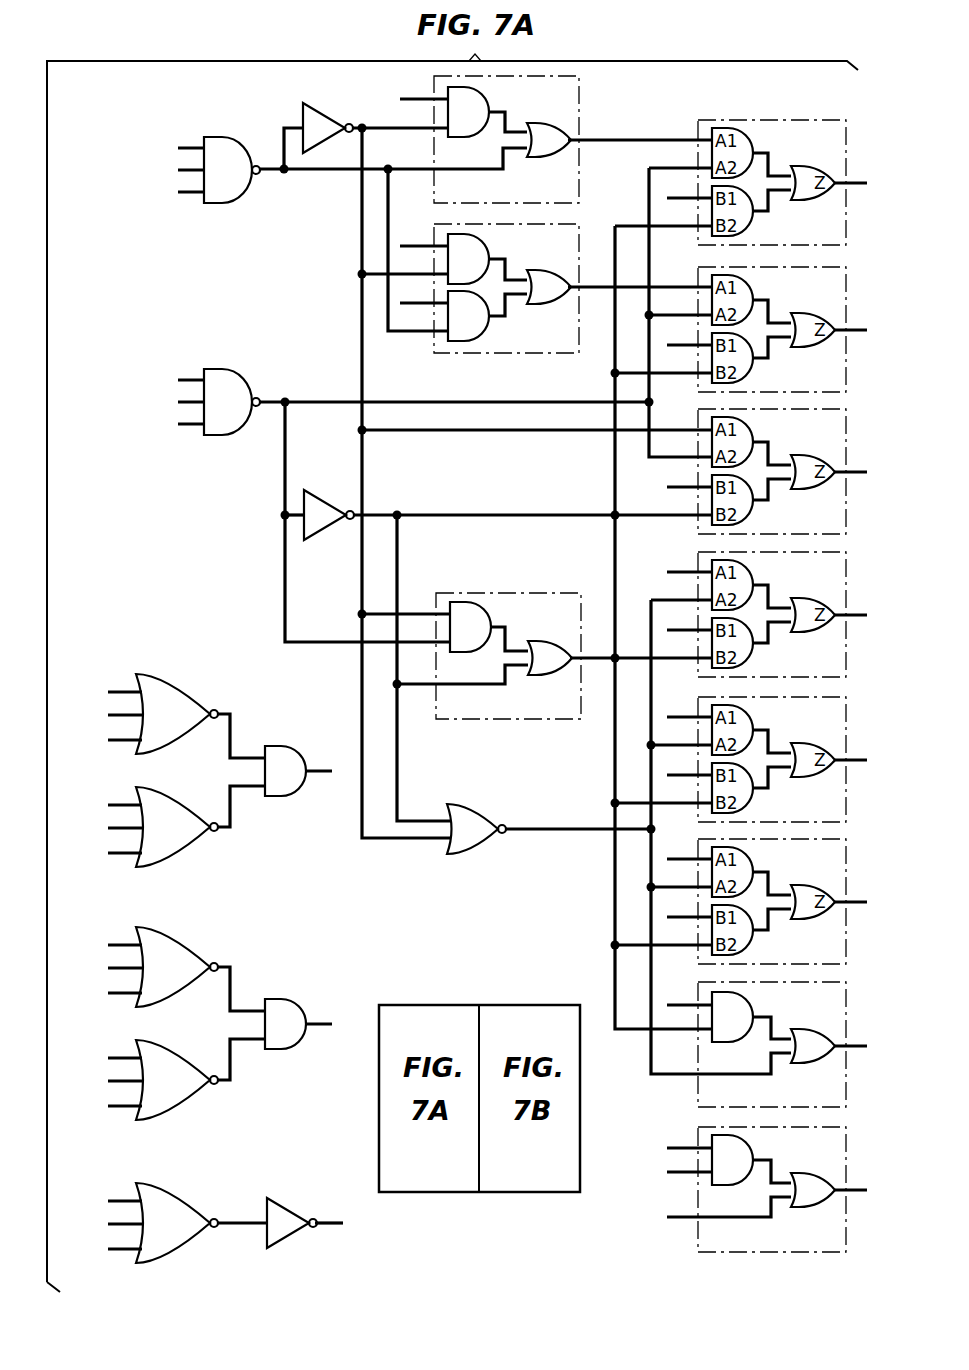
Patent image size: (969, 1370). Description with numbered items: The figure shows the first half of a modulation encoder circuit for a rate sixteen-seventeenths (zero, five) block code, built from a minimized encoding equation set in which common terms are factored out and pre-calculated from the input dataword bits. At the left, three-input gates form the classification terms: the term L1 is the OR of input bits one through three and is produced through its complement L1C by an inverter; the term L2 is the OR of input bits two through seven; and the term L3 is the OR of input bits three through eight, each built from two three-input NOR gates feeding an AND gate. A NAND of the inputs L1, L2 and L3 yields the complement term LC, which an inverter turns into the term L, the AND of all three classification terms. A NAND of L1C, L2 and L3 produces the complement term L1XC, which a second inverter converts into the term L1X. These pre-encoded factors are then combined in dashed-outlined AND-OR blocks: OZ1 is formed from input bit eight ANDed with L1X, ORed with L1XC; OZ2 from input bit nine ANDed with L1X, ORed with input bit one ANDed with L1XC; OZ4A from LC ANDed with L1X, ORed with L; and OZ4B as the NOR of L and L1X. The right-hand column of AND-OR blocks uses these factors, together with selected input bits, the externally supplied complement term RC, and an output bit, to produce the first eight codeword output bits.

The complement of the L1X term L1XC is at (226, 170).
The L1X term L1X is at (342, 126).
The complement of the L term LC is at (222, 401).
The L term L is at (368, 511).
The OZ1 factor OZ1 is at (552, 139).
The OZ2 factor OZ2 is at (552, 287).
The OZ4A factor OZ4A is at (574, 656).
The OZ4B factor OZ4B is at (502, 827).
The complement of the R term RC is at (717, 1212).
The L3 classification term L3 is at (205, 770).
The L2 classification term L2 is at (205, 1023).
The complement of the L1 term L1C is at (170, 1223).
The L1 classification term L1 is at (306, 1223).